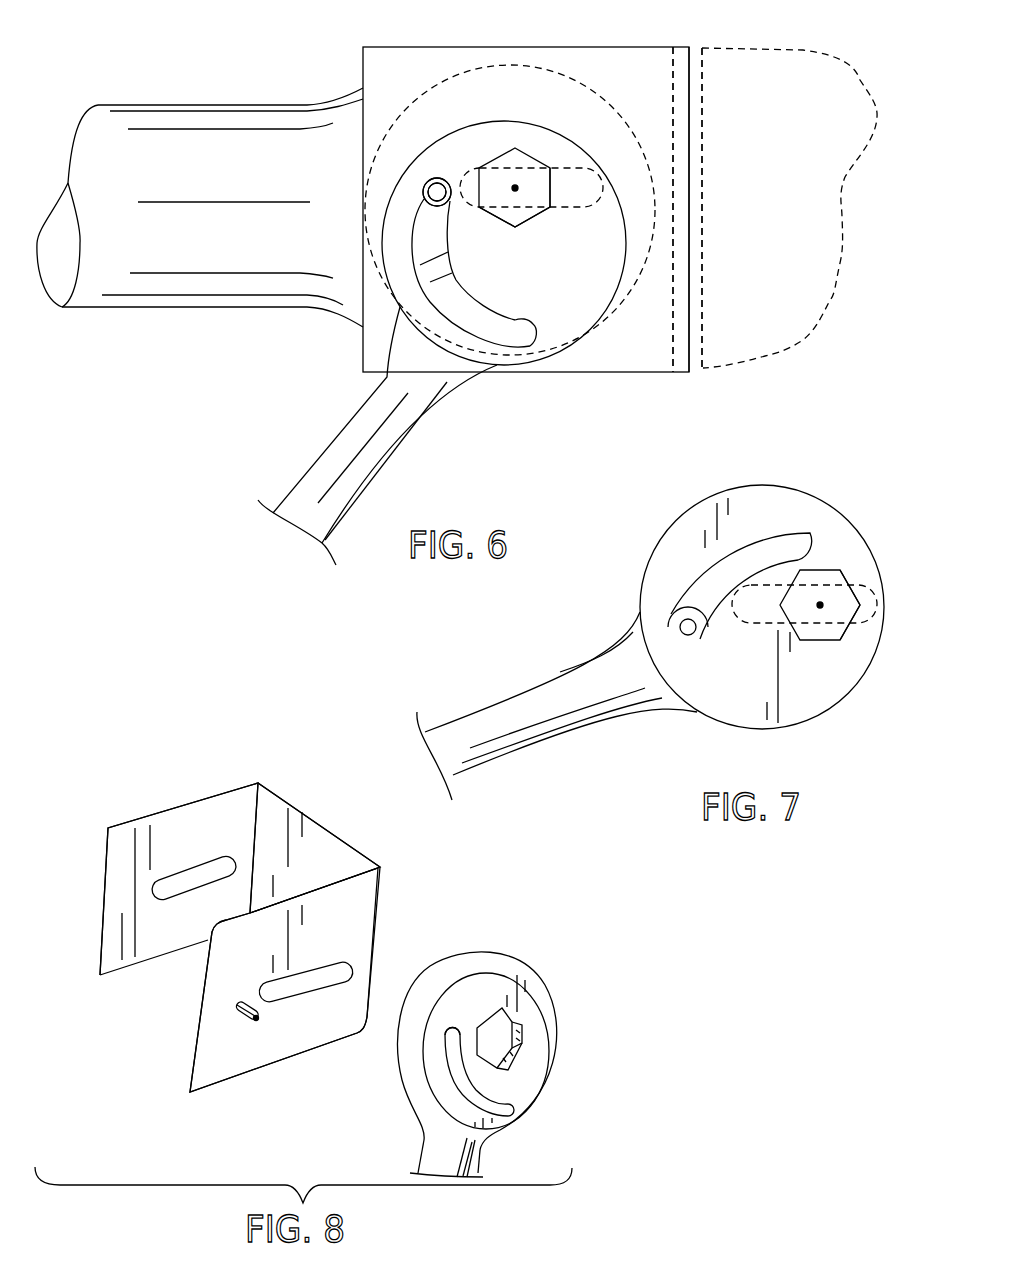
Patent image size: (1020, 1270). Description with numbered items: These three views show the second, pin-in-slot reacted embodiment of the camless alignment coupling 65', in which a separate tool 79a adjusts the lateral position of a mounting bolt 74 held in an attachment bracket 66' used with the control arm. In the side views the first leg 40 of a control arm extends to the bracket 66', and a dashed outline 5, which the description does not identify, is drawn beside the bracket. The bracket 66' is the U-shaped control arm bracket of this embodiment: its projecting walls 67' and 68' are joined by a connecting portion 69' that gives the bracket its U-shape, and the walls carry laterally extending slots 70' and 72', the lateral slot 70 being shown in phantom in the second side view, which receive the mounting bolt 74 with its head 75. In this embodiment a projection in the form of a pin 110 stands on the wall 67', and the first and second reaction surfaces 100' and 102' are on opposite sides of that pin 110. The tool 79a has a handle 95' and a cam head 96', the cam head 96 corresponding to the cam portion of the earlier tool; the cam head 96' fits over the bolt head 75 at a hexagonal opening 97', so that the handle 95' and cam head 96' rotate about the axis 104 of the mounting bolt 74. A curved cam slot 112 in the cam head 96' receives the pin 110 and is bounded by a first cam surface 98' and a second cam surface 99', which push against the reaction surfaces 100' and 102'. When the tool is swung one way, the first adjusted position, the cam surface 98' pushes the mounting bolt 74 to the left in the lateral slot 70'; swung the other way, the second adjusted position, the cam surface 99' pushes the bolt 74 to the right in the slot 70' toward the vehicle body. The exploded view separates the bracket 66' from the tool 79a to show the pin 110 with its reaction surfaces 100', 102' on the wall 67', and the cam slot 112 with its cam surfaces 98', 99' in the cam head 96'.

In FIG. 6, the pump housing outline 5 is at (729, 53).
In FIG. 6, the first leg 40 is at (152, 313).
In FIG. 6, the camless alignment coupling 65' is at (700, 209).
In FIG. 8, the camless alignment coupling 65' is at (240, 911).
In FIG. 6, the attachment bracket 66' is at (708, 209).
In FIG. 6, the bracket front panel 67' is at (700, 209).
In FIG. 8, the bracket front panel 67' is at (265, 980).
In FIG. 8, the bracket rear panel 68' is at (179, 864).
In FIG. 8, the bracket top panel 69' is at (315, 848).
In FIG. 7, the laterally extending slot 70 is at (802, 627).
In FIG. 6, the lateral slot 70' is at (534, 162).
In FIG. 8, the lateral slot 70' is at (306, 959).
In FIG. 8, the elongated slot 72' is at (194, 860).
In FIG. 6, the mounting bolt 74 is at (538, 160).
In FIG. 7, the mounting bolt 74 is at (847, 582).
In FIG. 6, the head 75 is at (512, 213).
In FIG. 7, the head 75 is at (852, 607).
In FIG. 6, the tool 79a is at (573, 140).
In FIG. 7, the tool 79a is at (831, 506).
In FIG. 8, the tool 79a is at (486, 952).
In FIG. 6, the handle 95' is at (377, 436).
In FIG. 7, the handle 95' is at (557, 706).
In FIG. 8, the handle 95' is at (432, 1157).
In FIG. 6, the cam head 96 is at (504, 272).
In FIG. 7, the cam head 96' is at (762, 630).
In FIG. 8, the cam head 96' is at (477, 1037).
In FIG. 6, the hex aperture 97' is at (514, 158).
In FIG. 7, the hex aperture 97' is at (820, 576).
In FIG. 8, the hex aperture 97' is at (500, 1021).
In FIG. 6, the first cam surface 98' is at (461, 273).
In FIG. 8, the first cam surface 98' is at (454, 1085).
In FIG. 6, the second cam surface 99' is at (472, 260).
In FIG. 8, the second cam surface 99' is at (484, 1069).
In FIG. 6, the reaction surface 100' is at (452, 168).
In FIG. 8, the reaction surface 100' is at (288, 1031).
In FIG. 6, the reaction surface 102' is at (410, 181).
In FIG. 8, the reaction surface 102' is at (239, 1036).
In FIG. 6, the axis 104 is at (515, 190).
In FIG. 7, the axis 104 is at (820, 606).
In FIG. 6, the pin 110 is at (432, 180).
In FIG. 7, the pin 110 is at (685, 617).
In FIG. 8, the pin 110 is at (247, 1003).
In FIG. 6, the curved cam slot 112 is at (527, 328).
In FIG. 7, the curved cam slot 112 is at (758, 543).
In FIG. 8, the curved cam slot 112 is at (458, 1080).